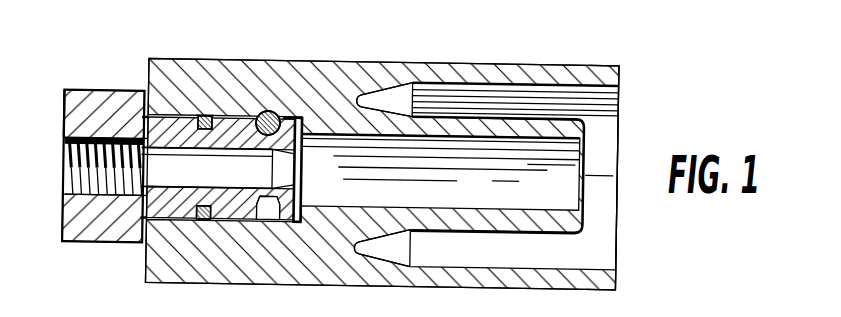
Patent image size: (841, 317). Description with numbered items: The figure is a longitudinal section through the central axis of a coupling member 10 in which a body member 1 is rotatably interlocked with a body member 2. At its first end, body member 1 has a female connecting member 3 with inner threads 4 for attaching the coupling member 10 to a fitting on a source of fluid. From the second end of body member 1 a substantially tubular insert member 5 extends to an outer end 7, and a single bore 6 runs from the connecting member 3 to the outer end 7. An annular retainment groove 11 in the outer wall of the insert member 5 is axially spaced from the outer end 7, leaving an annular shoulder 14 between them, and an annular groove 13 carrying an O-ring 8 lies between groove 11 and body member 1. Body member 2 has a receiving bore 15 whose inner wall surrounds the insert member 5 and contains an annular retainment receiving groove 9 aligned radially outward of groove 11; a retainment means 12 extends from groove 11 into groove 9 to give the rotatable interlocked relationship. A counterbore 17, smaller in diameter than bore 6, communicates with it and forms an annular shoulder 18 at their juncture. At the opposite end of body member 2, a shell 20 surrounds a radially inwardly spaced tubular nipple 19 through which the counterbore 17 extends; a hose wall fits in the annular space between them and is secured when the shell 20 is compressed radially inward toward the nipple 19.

The body member 1 is at (97, 90).
The body member 2 is at (235, 59).
The female connecting member 3 is at (63, 107).
The inner threads 4 is at (64, 150).
The insert member 5 is at (189, 190).
The bore 6 is at (167, 181).
The outer end 7 is at (301, 204).
The O-ring 8 is at (208, 114).
The annular retainment receiving groove 9 is at (275, 110).
The coupling member 10 is at (316, 50).
The annular retainment groove 11 is at (263, 150).
The retainment means 12 is at (298, 117).
The annular groove 13 is at (200, 117).
The annular shoulder 14 is at (301, 118).
The receiving bore 15 is at (196, 216).
The counterbore 17 is at (500, 194).
The annular shoulder 18 is at (303, 149).
The tubular nipple 19 is at (538, 114).
The shell 20 is at (576, 66).